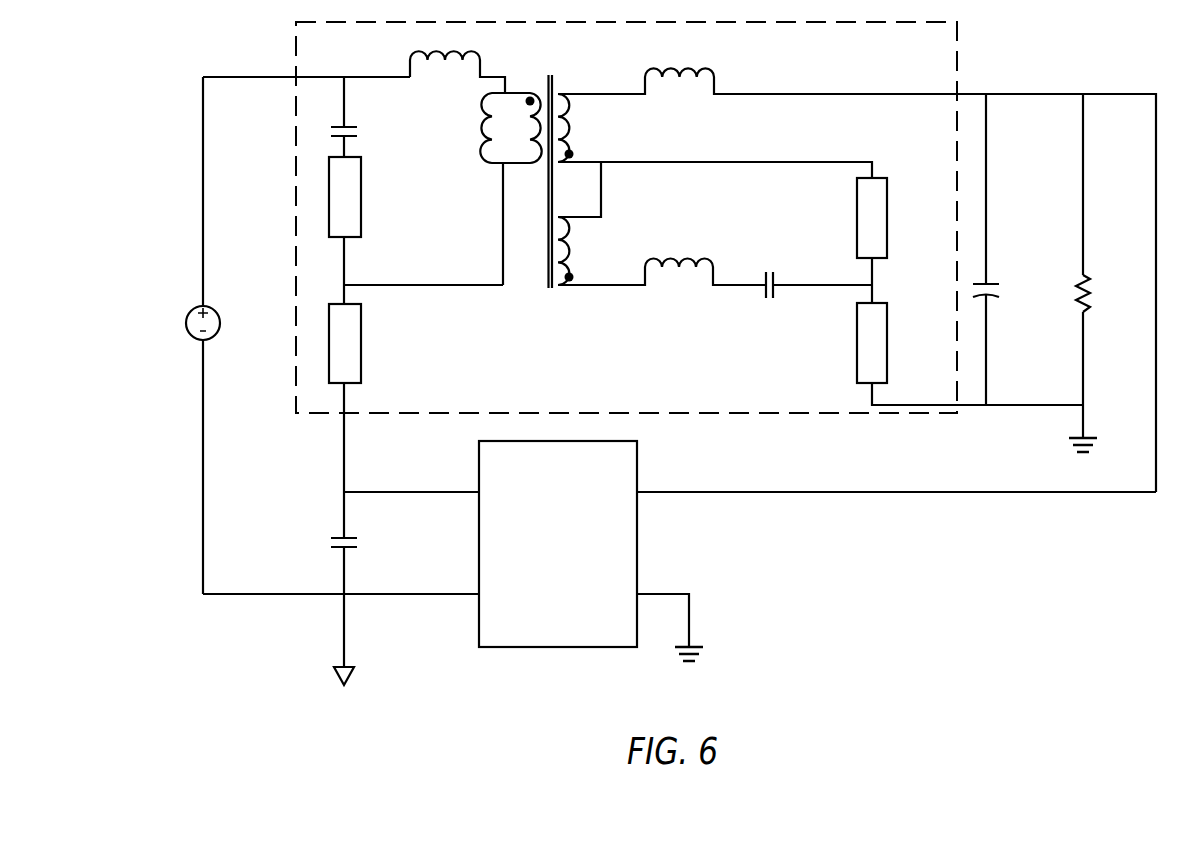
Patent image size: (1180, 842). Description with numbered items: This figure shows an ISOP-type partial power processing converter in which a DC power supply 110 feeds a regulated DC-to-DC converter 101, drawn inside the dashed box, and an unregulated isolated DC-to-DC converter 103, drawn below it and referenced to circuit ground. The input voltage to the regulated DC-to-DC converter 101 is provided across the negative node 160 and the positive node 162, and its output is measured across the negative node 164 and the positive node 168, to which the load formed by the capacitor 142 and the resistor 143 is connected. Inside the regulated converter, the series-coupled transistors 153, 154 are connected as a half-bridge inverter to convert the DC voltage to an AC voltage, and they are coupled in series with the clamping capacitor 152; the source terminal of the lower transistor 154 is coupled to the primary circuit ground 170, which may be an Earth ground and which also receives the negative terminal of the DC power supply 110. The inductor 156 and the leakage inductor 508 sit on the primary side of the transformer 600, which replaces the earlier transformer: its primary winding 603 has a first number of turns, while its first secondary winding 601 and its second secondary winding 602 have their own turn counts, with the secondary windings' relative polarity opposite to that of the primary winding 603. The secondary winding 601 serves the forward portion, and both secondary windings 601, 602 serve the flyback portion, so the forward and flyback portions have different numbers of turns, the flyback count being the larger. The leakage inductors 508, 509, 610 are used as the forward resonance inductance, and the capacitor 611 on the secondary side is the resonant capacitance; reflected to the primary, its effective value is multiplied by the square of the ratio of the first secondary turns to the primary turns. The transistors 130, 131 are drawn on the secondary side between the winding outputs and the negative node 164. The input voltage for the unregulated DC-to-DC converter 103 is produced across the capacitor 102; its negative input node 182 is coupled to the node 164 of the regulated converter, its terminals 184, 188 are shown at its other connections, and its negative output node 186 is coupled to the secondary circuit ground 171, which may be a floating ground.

The regulated DC-to-DC converter 101 is at (777, 413).
The capacitor 102 is at (350, 547).
The isolated DC-to-DC converter 103 is at (630, 441).
The DC power supply 110 is at (196, 310).
The transistor 130 is at (888, 195).
The transistor 131 is at (888, 333).
The capacitor 142 is at (996, 283).
The resistor 143 is at (1088, 276).
The clamping capacitor 152 is at (350, 127).
The transistor 153 is at (362, 220).
The transistor 154 is at (362, 362).
The inductor 156 is at (481, 112).
The negative node 160 is at (347, 397).
The positive node 162 is at (316, 77).
The negative node 164 is at (938, 405).
The positive node 168 is at (904, 93).
The primary circuit ground 170 is at (352, 673).
The secondary circuit ground 171 is at (1098, 438).
The negative input node 182 is at (432, 594).
The controller terminal 184 is at (432, 492).
The negative output node 186 is at (642, 594).
The controller terminal 188 is at (642, 492).
The forward-flyback transformer leakage inductor 508 is at (470, 50).
The forward-flyback transformer leakage inductor 509 is at (705, 68).
The transformer 600 is at (551, 290).
The first secondary winding 601 is at (560, 276).
The second secondary winding 602 is at (567, 91).
The primary winding 603 is at (530, 95).
The forward-flyback transformer leakage inductor 610 is at (700, 258).
The capacitor 611 is at (775, 272).